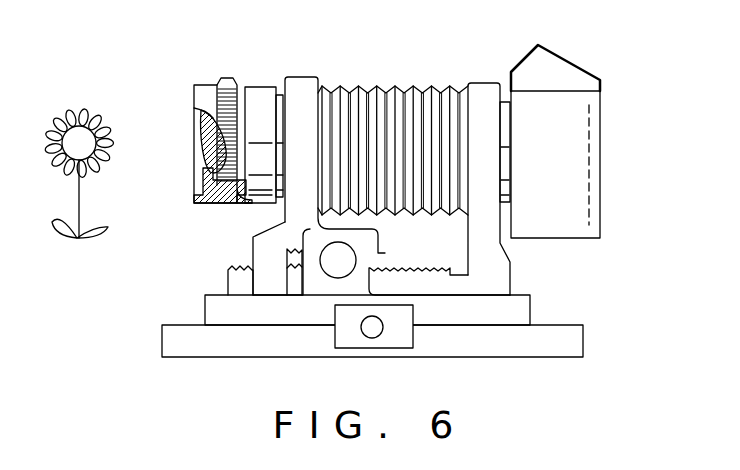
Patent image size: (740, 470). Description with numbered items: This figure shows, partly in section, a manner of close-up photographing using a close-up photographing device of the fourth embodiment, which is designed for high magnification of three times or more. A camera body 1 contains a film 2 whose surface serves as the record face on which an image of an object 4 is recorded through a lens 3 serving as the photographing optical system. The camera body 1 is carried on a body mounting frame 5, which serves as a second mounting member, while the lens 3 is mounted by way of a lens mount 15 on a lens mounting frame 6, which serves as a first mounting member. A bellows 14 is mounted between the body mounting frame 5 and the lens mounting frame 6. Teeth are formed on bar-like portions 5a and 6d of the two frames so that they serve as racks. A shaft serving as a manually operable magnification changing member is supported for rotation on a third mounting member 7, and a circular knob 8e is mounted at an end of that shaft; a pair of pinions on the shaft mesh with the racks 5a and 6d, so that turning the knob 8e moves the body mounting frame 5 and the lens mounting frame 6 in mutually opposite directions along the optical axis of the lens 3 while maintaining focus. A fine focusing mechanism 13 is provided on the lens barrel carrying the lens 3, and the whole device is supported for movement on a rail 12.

The camera body 1 is at (567, 68).
The film 2 is at (600, 182).
The lens 3 is at (202, 162).
The object 4 is at (85, 114).
The body mounting frame 5 is at (484, 100).
The bar-like portion of body mounting frame 5a is at (420, 268).
The lens mounting frame 6 is at (305, 88).
The bar-like portion of lens mounting frame 6d is at (296, 262).
The third mounting member 7 is at (522, 312).
The circular knob 8e is at (342, 262).
The rail 12 is at (551, 348).
The fine focusing mechanism 13 is at (220, 202).
The bellows 14 is at (395, 97).
The lens mount 15 is at (258, 90).